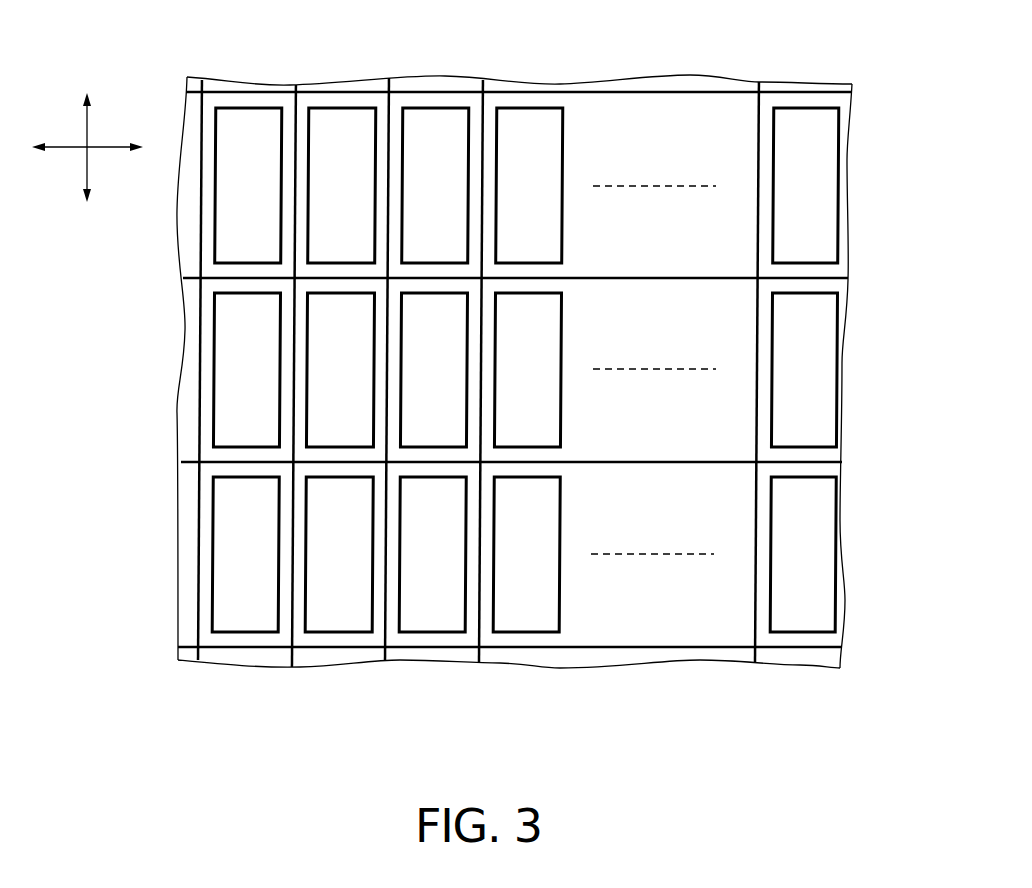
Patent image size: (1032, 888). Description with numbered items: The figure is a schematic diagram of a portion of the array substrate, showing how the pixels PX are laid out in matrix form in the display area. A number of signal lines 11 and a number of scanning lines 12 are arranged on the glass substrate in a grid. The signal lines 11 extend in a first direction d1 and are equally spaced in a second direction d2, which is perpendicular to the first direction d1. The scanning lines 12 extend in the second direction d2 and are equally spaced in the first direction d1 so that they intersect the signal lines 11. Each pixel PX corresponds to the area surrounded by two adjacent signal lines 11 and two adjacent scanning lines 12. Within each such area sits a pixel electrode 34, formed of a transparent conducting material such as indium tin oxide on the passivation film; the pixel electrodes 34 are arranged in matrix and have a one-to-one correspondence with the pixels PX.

The signal line 11 is at (202, 148).
The scanning line 12 is at (660, 278).
The pixel electrode 34 is at (803, 108).
The pixel PX is at (243, 650).
The first direction d1 is at (85, 124).
The second direction d2 is at (70, 148).